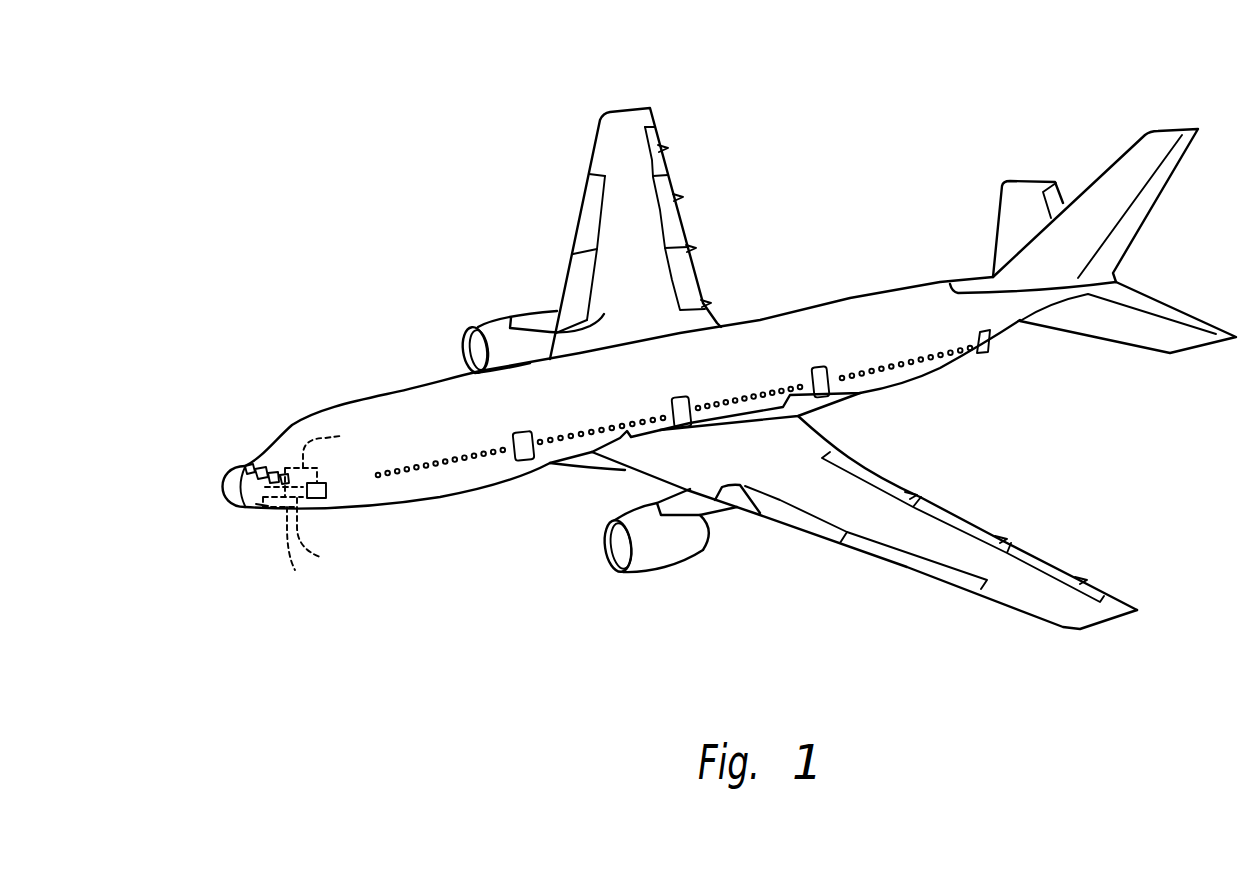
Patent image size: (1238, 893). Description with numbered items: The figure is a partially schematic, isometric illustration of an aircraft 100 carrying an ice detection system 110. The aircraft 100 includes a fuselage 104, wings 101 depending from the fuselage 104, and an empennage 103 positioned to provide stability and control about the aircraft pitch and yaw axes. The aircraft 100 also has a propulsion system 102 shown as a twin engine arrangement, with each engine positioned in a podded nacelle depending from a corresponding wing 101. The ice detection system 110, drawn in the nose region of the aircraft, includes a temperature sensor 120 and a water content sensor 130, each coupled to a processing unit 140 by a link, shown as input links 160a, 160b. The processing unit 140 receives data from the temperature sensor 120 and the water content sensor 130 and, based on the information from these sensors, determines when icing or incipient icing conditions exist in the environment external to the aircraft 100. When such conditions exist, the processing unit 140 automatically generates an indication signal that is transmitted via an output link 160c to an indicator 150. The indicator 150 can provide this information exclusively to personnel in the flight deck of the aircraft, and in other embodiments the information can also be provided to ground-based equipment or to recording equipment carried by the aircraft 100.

The aircraft 100 is at (320, 230).
The wings 101 is at (597, 163).
The propulsion system 102 is at (357, 397).
The empennage 103 is at (1060, 153).
The fuselage 104 is at (467, 474).
The ice detection system 110 is at (263, 527).
The temperature sensor 120 is at (261, 487).
The water content sensor 130 is at (262, 503).
The processing unit 140 is at (326, 497).
The indicator 150 is at (247, 463).
The input link 160a is at (306, 553).
The input link 160b is at (332, 536).
The output link 160c is at (344, 446).